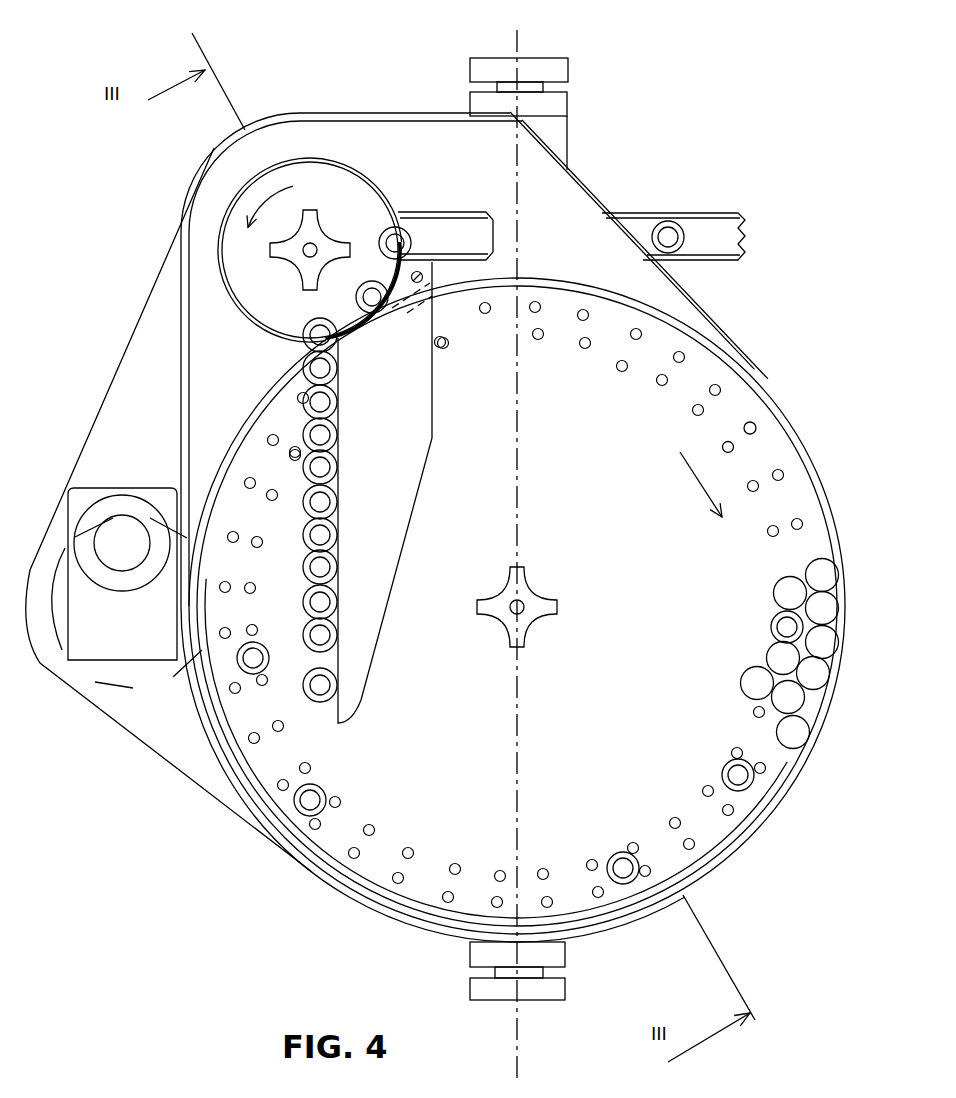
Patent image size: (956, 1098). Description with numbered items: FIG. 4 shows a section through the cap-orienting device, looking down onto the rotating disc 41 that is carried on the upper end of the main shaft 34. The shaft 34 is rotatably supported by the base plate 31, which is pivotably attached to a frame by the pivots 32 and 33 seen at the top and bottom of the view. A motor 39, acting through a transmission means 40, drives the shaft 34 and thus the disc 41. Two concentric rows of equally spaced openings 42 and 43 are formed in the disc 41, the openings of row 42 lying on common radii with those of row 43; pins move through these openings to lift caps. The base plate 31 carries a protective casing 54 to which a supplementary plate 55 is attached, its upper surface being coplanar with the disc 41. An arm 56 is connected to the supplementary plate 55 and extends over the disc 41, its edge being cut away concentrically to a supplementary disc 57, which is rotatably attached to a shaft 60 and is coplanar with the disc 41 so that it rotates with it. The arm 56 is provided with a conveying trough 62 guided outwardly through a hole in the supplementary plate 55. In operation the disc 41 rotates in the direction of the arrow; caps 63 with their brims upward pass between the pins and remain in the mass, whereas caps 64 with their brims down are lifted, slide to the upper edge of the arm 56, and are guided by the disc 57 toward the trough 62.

The base plate 31 is at (103, 412).
The pivot 32 is at (548, 58).
The pivot 33 is at (540, 1000).
The main shaft 34 is at (519, 609).
The motor 39 is at (147, 488).
The transmission means 40 is at (115, 653).
The disc 41 is at (808, 523).
The row of openings 42 is at (723, 449).
The row of openings 43 is at (748, 435).
The protective casing 54 is at (183, 412).
The supplementary plate 55 is at (560, 193).
The arm 56 is at (422, 481).
The supplementary disc 57 is at (377, 195).
The shaft 60 is at (318, 246).
The conveying trough 62 is at (447, 226).
The caps with brims upward 63 is at (774, 590).
The caps with brims down 64 is at (771, 628).